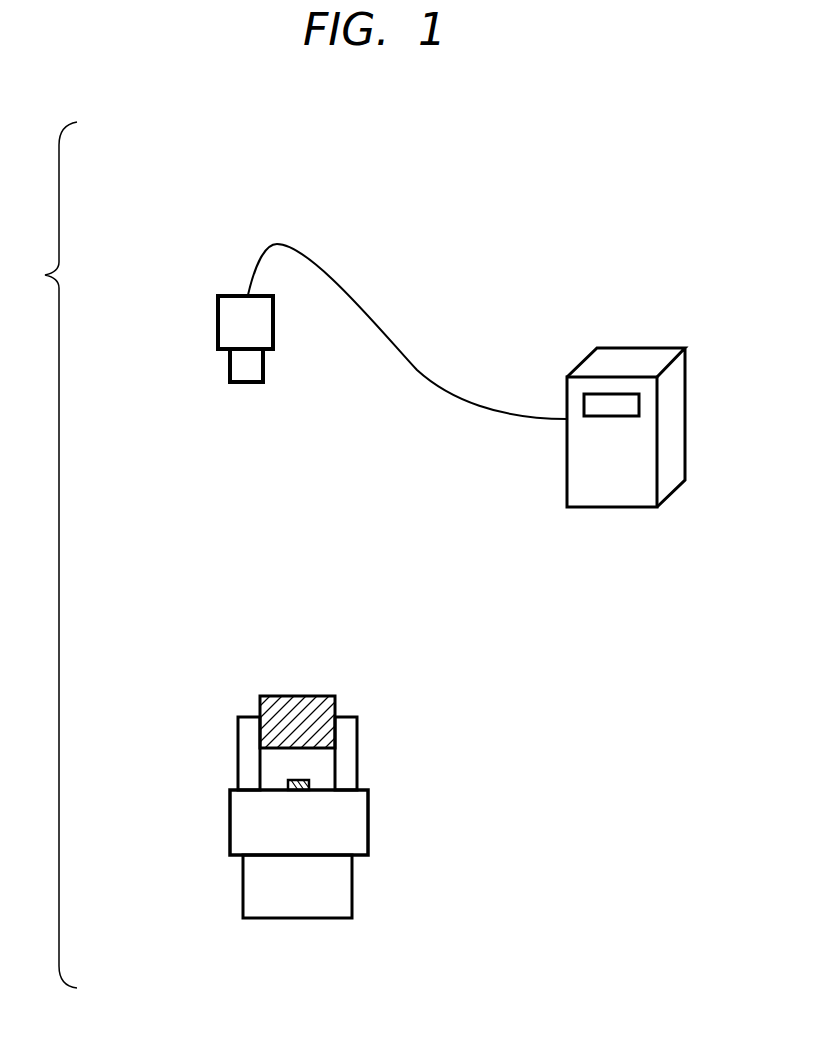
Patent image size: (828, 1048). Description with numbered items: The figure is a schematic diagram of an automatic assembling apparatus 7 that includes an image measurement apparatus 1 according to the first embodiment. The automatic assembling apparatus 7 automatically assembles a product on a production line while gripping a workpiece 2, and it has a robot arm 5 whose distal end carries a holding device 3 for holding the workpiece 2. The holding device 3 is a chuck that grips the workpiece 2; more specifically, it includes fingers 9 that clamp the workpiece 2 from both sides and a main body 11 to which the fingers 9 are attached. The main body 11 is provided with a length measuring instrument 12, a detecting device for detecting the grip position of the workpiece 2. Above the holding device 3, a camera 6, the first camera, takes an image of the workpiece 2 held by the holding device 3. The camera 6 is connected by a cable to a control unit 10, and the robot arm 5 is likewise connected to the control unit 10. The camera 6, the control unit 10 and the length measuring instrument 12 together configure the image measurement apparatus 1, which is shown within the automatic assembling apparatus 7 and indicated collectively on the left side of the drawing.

The image measurement apparatus 1 is at (182, 242).
The workpiece 2 is at (286, 696).
The holding device 3 is at (363, 712).
The robot arm 5 is at (187, 930).
The camera 6 is at (218, 321).
The automatic assembling apparatus 7 is at (430, 210).
The finger 9 is at (238, 738).
The control unit 10 is at (648, 345).
The main body 11 is at (368, 830).
The length measuring instrument 12 is at (295, 780).